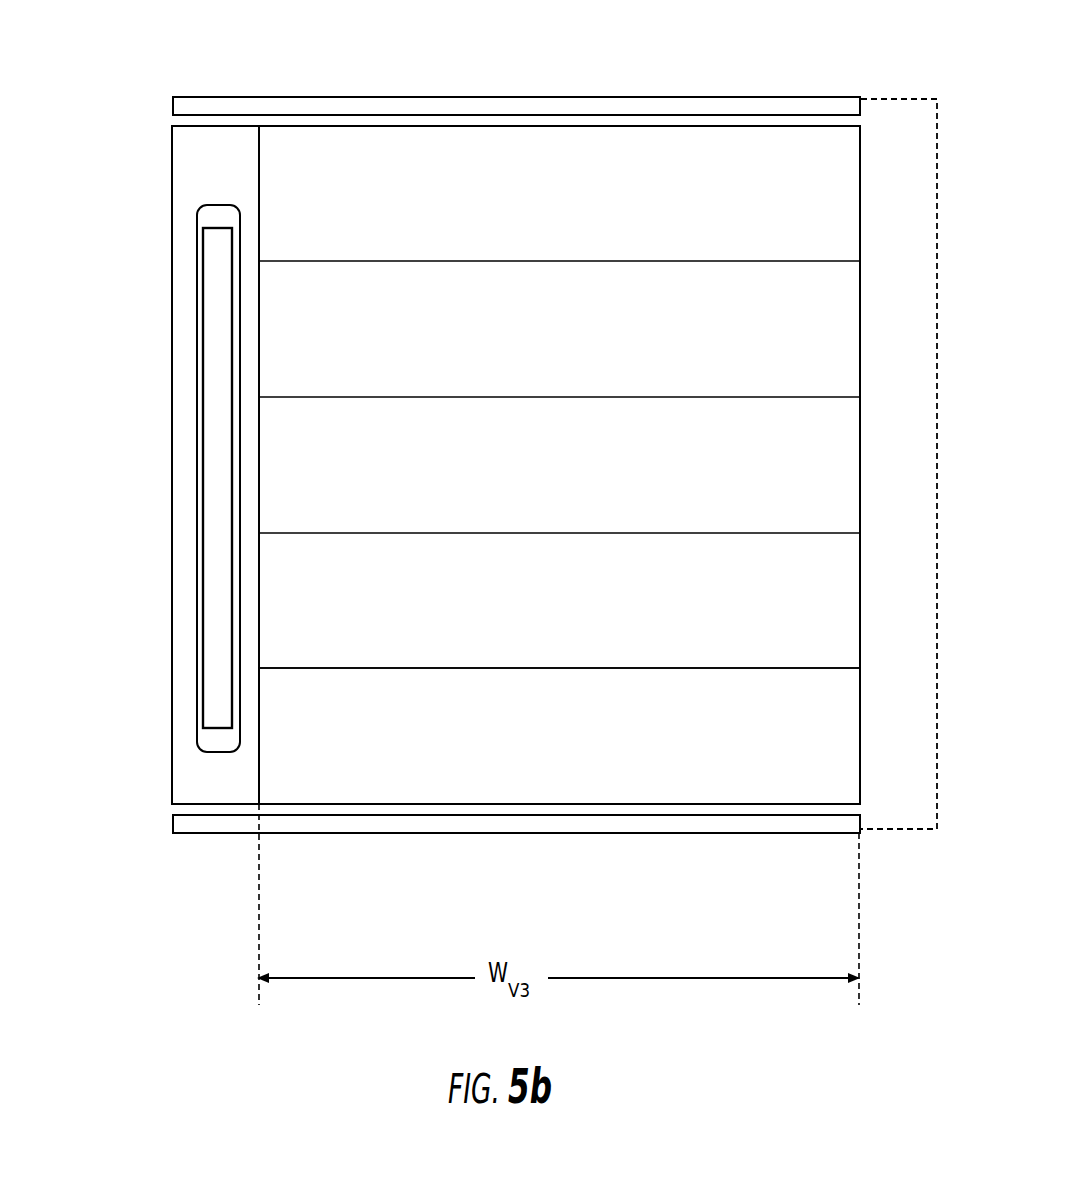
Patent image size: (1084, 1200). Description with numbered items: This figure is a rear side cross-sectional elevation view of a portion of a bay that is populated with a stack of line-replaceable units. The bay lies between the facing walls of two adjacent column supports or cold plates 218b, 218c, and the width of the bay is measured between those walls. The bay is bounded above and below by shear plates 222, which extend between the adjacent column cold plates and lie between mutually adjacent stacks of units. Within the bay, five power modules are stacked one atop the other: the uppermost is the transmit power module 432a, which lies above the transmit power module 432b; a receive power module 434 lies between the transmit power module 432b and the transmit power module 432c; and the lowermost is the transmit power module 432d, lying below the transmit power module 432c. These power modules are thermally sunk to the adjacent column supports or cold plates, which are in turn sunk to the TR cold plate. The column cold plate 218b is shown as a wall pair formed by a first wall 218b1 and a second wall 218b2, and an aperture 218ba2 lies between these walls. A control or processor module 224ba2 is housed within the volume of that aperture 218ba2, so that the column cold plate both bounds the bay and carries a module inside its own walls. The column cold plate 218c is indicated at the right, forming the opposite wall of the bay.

The shear plate 222 is at (503, 105).
The column support or cold plate 218b is at (229, 145).
The wall 218b1 is at (181, 348).
The wall 218b2 is at (260, 400).
The control or processor module 224ba2 is at (214, 487).
The aperture 218ba2 is at (218, 752).
The column support or cold plate 218c is at (896, 68).
The transmit power module 432a is at (550, 188).
The transmit power module 432b is at (550, 313).
The receive power module 434 is at (541, 457).
The transmit power module 432c is at (550, 600).
The transmit power module 432d is at (550, 743).